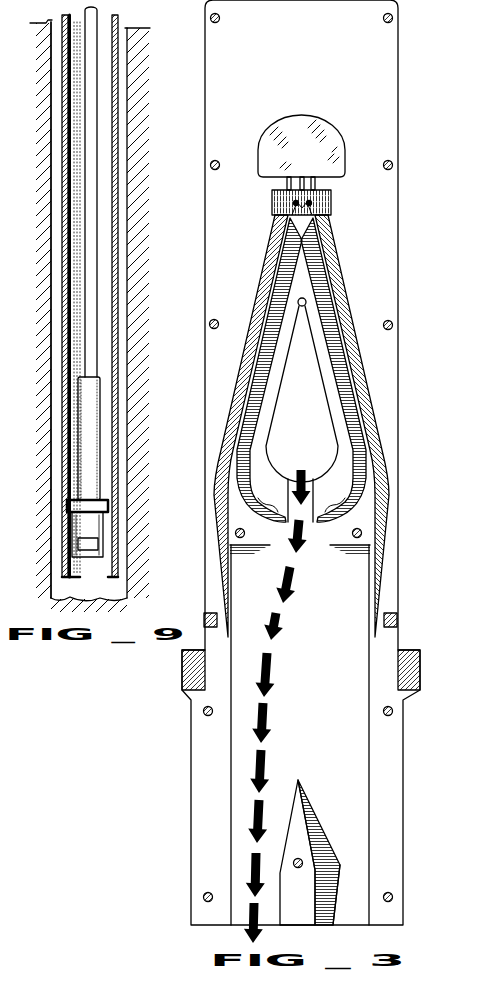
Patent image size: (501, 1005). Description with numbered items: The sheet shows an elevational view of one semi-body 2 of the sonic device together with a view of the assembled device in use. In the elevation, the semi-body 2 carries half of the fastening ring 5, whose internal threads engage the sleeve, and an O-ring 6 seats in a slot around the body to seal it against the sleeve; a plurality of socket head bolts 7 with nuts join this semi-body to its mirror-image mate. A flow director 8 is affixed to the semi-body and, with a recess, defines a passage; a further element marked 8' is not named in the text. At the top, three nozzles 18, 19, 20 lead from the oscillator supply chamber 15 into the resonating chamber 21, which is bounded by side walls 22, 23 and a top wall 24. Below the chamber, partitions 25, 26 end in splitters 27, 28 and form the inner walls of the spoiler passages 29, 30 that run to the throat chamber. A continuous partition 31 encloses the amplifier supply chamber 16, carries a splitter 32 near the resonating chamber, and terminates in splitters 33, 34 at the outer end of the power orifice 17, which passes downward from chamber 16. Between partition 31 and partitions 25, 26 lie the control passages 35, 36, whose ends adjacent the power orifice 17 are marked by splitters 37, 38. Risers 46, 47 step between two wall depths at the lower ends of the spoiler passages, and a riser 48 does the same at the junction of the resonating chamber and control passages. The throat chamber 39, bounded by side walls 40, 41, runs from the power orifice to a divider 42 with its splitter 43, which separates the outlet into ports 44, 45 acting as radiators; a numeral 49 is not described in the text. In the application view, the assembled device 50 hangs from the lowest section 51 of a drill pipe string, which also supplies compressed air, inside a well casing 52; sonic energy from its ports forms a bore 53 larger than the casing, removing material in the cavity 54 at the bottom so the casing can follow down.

In FIG. 3, the semi-body 2 is at (398, 250).
In FIG. 3, the fastening ring 5 is at (415, 670).
In FIG. 3, the O-ring 6 is at (397, 620).
In FIG. 3, the socket head bolt 7 is at (211, 17).
In FIG. 3, the flow director 8 is at (315, 130).
In FIG. 3, the inner bulb 8' is at (302, 390).
In FIG. 3, the oscillator supply chamber 15 is at (325, 139).
In FIG. 3, the amplifier supply chamber 16 is at (288, 434).
In FIG. 3, the power orifice 17 is at (310, 481).
In FIG. 3, the nozzle 18 is at (304, 176).
In FIG. 3, the nozzle 19 is at (287, 184).
In FIG. 3, the nozzle 20 is at (316, 180).
In FIG. 3, the resonating chamber 21 is at (317, 190).
In FIG. 3, the side wall 22 is at (277, 214).
In FIG. 3, the side wall 23 is at (323, 198).
In FIG. 3, the top wall 24 is at (280, 199).
In FIG. 3, the partition 25 is at (252, 367).
In FIG. 3, the partition 26 is at (350, 370).
In FIG. 3, the splitter 27 is at (270, 240).
In FIG. 3, the splitter 28 is at (318, 225).
In FIG. 3, the spoiler passage 29 is at (263, 282).
In FIG. 3, the spoiler passage 30 is at (342, 290).
In FIG. 3, the partition 31 is at (263, 418).
In FIG. 3, the splitter 32 is at (305, 257).
In FIG. 3, the splitter 33 is at (262, 501).
In FIG. 3, the splitter 34 is at (343, 497).
In FIG. 3, the control passage 35 is at (265, 343).
In FIG. 3, the control passage 36 is at (345, 395).
In FIG. 3, the splitter 37 is at (253, 548).
In FIG. 3, the splitter 38 is at (345, 548).
In FIG. 3, the throat chamber 39 is at (312, 670).
In FIG. 3, the side wall 40 is at (230, 768).
In FIG. 3, the side wall 41 is at (368, 764).
In FIG. 3, the divider 42 is at (318, 895).
In FIG. 3, the splitter 43 is at (299, 806).
In FIG. 3, the port 44 is at (283, 905).
In FIG. 3, the port 45 is at (350, 878).
In FIG. 3, the riser 46 is at (232, 587).
In FIG. 3, the riser 47 is at (366, 595).
In FIG. 3, the riser 48 is at (312, 203).
In FIG. 3, the housing part 49 is at (12, 842).
In FIG. 9, the device 50 is at (90, 478).
In FIG. 9, the lowest section of drill pipe 51 is at (90, 316).
In FIG. 9, the well casing 52 is at (65, 356).
In FIG. 9, the bore 53 is at (50, 405).
In FIG. 9, the cavity 54 is at (100, 585).